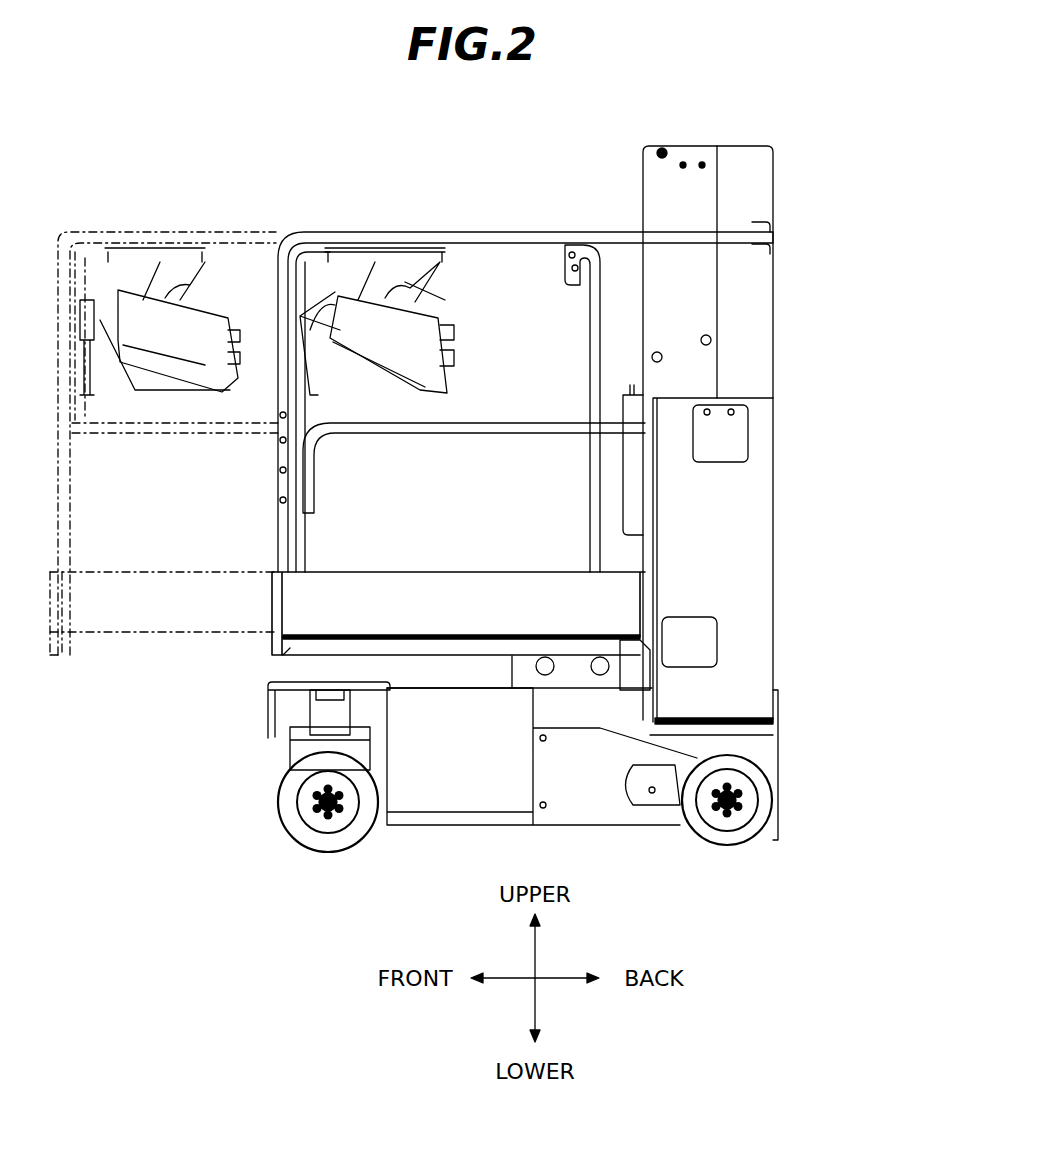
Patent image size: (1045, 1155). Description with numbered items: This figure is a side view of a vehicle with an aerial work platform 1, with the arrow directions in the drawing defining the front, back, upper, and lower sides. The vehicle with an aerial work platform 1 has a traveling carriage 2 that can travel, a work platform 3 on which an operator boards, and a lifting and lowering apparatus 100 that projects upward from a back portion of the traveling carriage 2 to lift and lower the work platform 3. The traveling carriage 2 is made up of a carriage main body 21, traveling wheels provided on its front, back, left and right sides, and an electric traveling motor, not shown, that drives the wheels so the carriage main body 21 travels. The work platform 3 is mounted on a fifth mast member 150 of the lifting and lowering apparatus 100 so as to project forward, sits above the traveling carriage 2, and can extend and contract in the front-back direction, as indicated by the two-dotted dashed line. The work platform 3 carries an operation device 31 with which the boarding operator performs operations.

The vehicle with an aerial work platform 1 is at (268, 180).
The traveling carriage 2 is at (256, 749).
The work platform 3 is at (302, 590).
The carriage main body 21 is at (762, 748).
The operation device 31 is at (422, 333).
The lifting and lowering apparatus 100 is at (775, 328).
The fifth mast member 150 is at (698, 433).